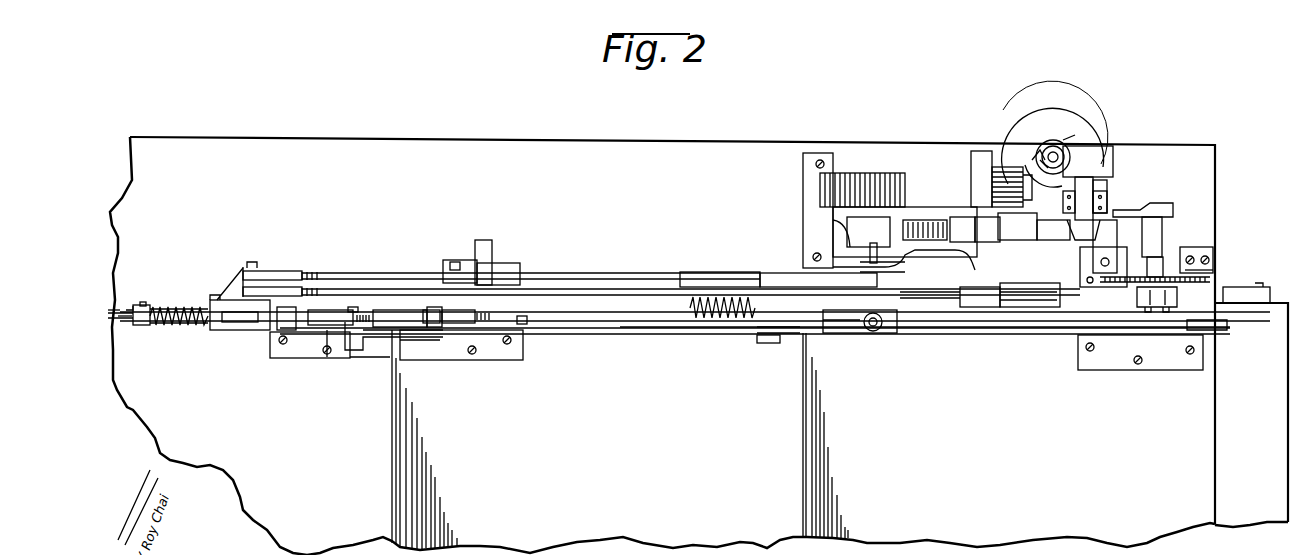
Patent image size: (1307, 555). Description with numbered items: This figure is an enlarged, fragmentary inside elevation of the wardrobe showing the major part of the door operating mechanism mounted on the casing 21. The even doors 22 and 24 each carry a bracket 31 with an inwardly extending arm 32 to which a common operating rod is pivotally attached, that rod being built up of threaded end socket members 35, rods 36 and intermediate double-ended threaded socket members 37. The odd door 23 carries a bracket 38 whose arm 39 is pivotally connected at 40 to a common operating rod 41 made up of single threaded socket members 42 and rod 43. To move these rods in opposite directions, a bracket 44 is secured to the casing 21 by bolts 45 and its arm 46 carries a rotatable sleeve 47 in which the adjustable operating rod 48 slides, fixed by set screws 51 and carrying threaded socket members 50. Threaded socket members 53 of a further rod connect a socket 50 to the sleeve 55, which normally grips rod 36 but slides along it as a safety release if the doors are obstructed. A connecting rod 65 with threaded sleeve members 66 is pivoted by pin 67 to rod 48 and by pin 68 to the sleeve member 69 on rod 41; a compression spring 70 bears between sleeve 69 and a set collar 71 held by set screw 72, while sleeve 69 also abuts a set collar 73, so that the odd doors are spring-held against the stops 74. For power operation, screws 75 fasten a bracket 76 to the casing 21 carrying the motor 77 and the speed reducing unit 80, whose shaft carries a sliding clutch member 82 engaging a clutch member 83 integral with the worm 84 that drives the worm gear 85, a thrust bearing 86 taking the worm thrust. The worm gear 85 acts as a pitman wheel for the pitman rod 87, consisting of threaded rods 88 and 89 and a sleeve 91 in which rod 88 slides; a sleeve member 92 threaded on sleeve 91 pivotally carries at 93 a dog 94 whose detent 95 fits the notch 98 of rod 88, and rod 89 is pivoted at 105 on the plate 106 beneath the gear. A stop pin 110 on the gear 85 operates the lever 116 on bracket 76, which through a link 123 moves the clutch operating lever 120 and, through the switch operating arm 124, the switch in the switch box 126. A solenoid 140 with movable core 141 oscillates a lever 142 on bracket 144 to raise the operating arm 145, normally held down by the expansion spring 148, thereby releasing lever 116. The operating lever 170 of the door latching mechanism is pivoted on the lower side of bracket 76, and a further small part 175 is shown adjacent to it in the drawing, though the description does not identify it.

The casing 21 is at (1237, 479).
The door 22 is at (979, 504).
The door 23 is at (599, 505).
The door 24 is at (312, 494).
The bracket 31 is at (300, 351).
The arm 32 is at (416, 342).
The threaded end socket member 35 is at (618, 326).
The rod 36 is at (117, 305).
The double-ended threaded socket member 37 is at (400, 309).
The bracket 38 is at (487, 356).
The arm 39 is at (352, 360).
The pivotal connection 40 is at (355, 306).
The operating rod 41 is at (126, 312).
The single threaded socket member 42 is at (328, 309).
The rod 43 is at (172, 327).
The bracket 44 is at (1195, 260).
The bolt 45 is at (1210, 262).
The arm 46 is at (1218, 275).
The sleeve 47 is at (1178, 280).
The operating rod 48 is at (1053, 285).
The threaded socket member 50 is at (1031, 285).
The set screw 51 is at (1140, 315).
The threaded socket member 53 is at (898, 294).
The sleeve 55 is at (845, 333).
The connecting rod 65 is at (571, 298).
The threaded sleeve member 66 is at (283, 285).
The pin 67 is at (1012, 307).
The pin 68 is at (252, 262).
The sleeve member 69 is at (265, 328).
The compression spring 70 is at (183, 316).
The set collar 71 is at (143, 326).
The set screw 72 is at (143, 304).
The set collar 73 is at (290, 306).
The stop 74 is at (760, 340).
The screw 75 is at (815, 255).
The bracket 76 is at (870, 207).
The motor 77 is at (1098, 150).
The speed reducing unit 80 is at (1115, 150).
The clutch member 82 is at (1039, 241).
The clutch member 83 is at (980, 217).
The worm 84 is at (1000, 250).
The worm gear 85 is at (906, 227).
The thrust bearing 86 is at (948, 217).
The pitman rod 87 is at (668, 273).
The threaded rod 88 is at (443, 265).
The threaded rod 89 is at (773, 272).
The sleeve 91 is at (637, 273).
The sleeve member 92 is at (503, 271).
The pivot 93 is at (452, 262).
The dog 94 is at (478, 260).
The detent 95 is at (480, 280).
The notch 98 is at (456, 284).
The pivot 105 is at (778, 349).
The plate 106 is at (968, 262).
The stop pin 110 is at (900, 257).
The lever 116 is at (1118, 213).
The clutch operating lever 120 is at (990, 195).
The link 123 is at (1000, 170).
The switch operating arm 124 is at (1163, 218).
The switch box 126 is at (1145, 253).
The solenoid 140 is at (978, 170).
The movable core 141 is at (1010, 200).
The lever 142 is at (1035, 155).
The bracket 144 is at (1040, 158).
The operating arm 145 is at (1075, 135).
The expansion spring 148 is at (1045, 162).
The operating lever 170 is at (891, 232).
The pin 175 is at (876, 247).